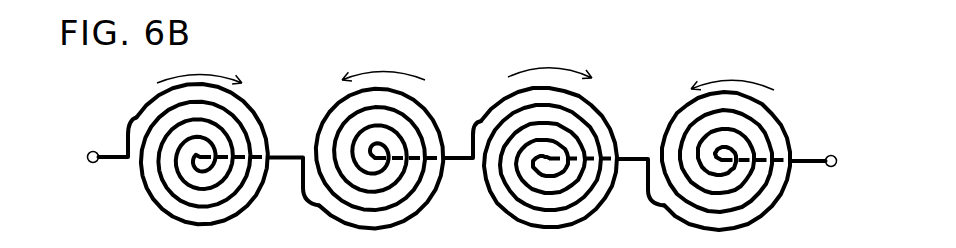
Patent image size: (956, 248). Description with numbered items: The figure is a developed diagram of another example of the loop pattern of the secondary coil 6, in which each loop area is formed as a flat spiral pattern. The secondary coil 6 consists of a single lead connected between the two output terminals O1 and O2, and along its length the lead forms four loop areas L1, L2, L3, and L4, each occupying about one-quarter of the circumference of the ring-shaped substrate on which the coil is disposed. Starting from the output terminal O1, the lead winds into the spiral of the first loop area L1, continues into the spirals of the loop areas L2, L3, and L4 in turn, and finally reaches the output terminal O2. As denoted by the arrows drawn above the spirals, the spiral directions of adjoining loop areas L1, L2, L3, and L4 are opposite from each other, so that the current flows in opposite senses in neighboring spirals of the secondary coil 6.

The secondary coil 6 is at (137, 126).
The loop area L1 is at (265, 101).
The loop area L2 is at (335, 102).
The loop area L3 is at (600, 101).
The loop area L4 is at (689, 101).
The output terminal O1 is at (92, 144).
The output terminal O2 is at (825, 151).